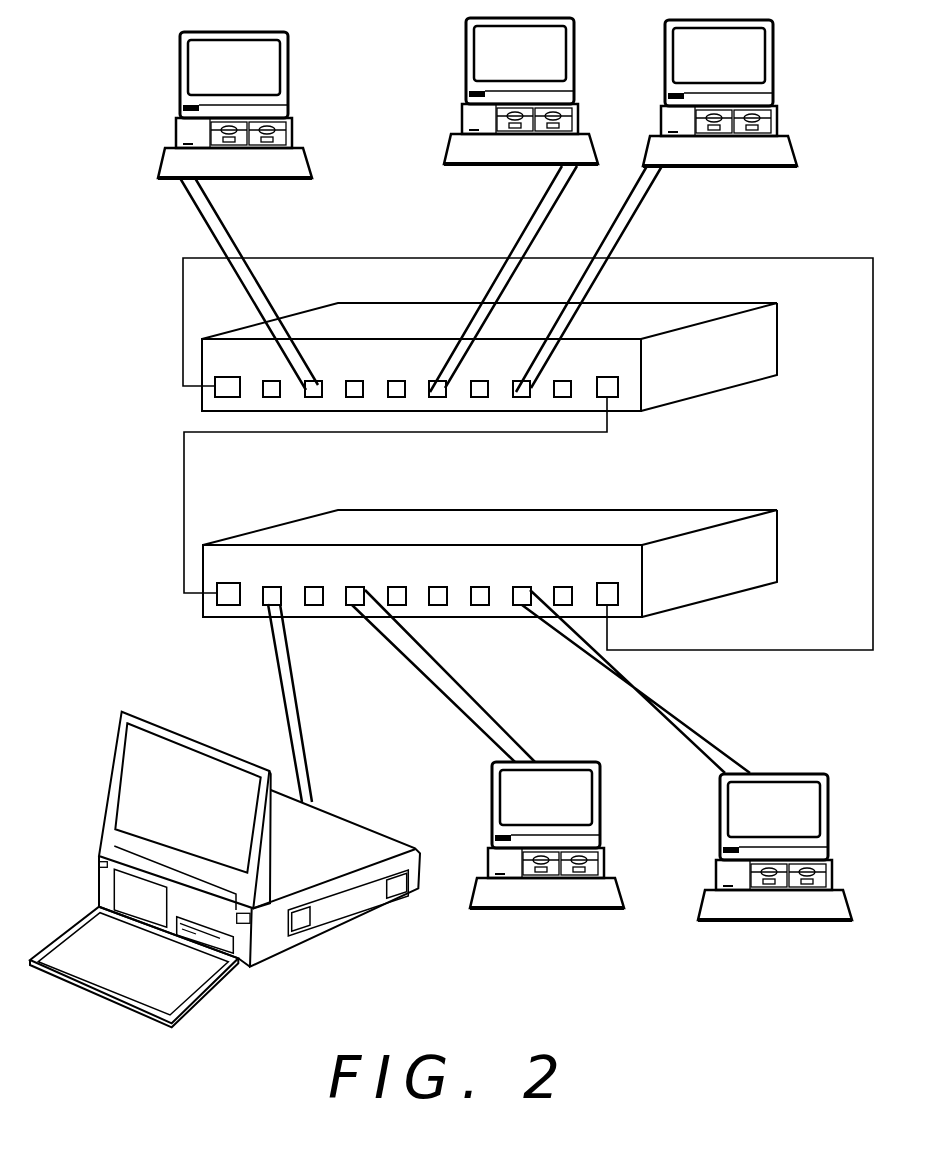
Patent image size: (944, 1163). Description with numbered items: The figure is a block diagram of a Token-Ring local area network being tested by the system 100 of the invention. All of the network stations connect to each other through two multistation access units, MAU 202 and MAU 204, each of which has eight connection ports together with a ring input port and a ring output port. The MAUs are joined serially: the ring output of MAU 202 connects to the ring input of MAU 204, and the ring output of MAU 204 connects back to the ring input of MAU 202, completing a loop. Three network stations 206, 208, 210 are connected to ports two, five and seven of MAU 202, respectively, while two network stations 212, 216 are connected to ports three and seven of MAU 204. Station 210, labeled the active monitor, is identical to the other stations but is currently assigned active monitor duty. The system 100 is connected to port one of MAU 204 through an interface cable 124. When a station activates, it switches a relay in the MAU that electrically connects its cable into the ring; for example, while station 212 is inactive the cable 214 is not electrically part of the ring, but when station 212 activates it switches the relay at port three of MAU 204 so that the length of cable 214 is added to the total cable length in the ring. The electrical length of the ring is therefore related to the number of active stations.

The system 100 is at (297, 948).
The interface cable 124 is at (292, 700).
The multistation access unit 202 is at (727, 290).
The multistation access unit 204 is at (608, 510).
The network station 206 is at (290, 72).
The network station 208 is at (468, 82).
The network station 210 is at (777, 54).
The network station 212 is at (602, 810).
The cable 214 is at (446, 673).
The network station 216 is at (782, 772).